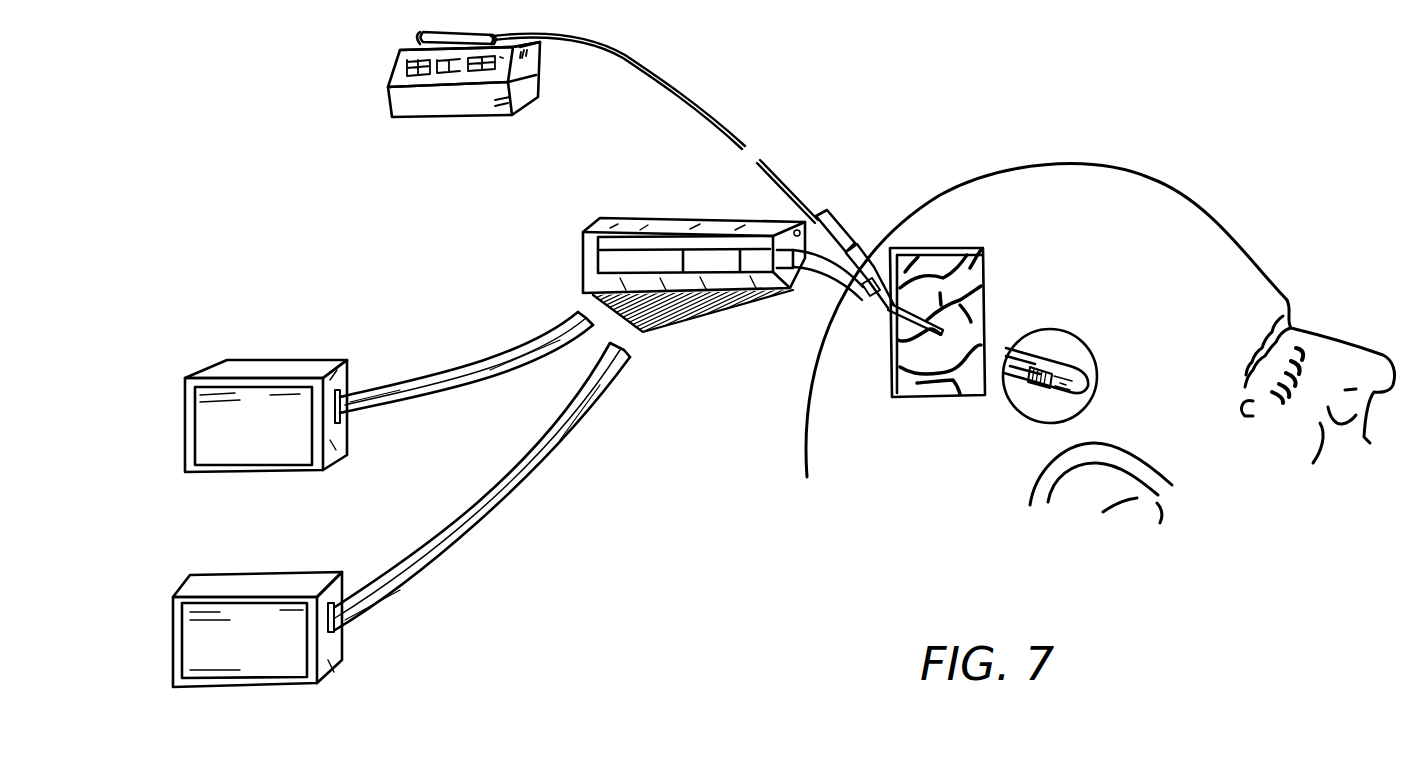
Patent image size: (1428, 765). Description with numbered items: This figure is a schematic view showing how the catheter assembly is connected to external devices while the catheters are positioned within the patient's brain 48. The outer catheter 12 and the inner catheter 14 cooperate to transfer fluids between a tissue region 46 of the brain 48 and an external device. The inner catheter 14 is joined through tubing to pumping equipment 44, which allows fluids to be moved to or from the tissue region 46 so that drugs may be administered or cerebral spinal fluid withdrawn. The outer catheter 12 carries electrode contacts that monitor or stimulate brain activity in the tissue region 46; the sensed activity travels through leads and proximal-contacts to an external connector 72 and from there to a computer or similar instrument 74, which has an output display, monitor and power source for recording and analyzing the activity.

The outer catheter 12 is at (812, 265).
The inner catheter 14 is at (854, 256).
The pumping equipment 44 is at (403, 98).
The tissue region 46 is at (1050, 410).
The brain 48 is at (983, 252).
The external connector 72 is at (585, 248).
The computer or similar instrument 74 is at (193, 592).